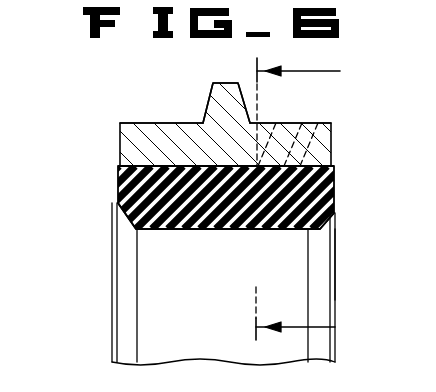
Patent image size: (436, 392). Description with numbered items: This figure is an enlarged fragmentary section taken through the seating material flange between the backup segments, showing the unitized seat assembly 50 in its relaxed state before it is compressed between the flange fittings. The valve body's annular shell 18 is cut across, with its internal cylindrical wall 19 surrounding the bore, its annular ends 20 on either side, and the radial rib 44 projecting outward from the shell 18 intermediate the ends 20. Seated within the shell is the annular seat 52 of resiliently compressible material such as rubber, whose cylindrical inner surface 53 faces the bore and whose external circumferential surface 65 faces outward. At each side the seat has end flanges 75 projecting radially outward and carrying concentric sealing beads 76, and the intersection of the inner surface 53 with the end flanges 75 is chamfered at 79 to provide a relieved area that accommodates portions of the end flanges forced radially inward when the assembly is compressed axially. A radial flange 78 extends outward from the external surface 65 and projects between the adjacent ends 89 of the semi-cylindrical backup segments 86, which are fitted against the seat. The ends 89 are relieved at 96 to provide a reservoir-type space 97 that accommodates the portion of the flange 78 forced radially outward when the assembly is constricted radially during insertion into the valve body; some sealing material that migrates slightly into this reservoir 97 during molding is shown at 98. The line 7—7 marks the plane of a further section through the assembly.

The section line 7- 7 is at (298, 201).
The annular shell 18 is at (148, 121).
The internal cylindrical wall 19 is at (153, 166).
The annular ends 20 is at (125, 146).
The radial rib 44 is at (230, 82).
The unitized seat assembly 50 is at (100, 215).
The annular seat 52 is at (110, 310).
The inner surface 53 is at (334, 258).
The external circumferential surface 65 is at (270, 233).
The end flanges 75 is at (113, 266).
The sealing beads 76 is at (116, 198).
The radial flanges 78 is at (240, 232).
The chamfer 79 is at (128, 230).
The backup segments 86 is at (325, 124).
The ends of backup segments 89 is at (175, 235).
The relief 96 is at (304, 104).
The reservoir-type space 97 is at (303, 101).
The migrated sealing material 98 is at (183, 166).